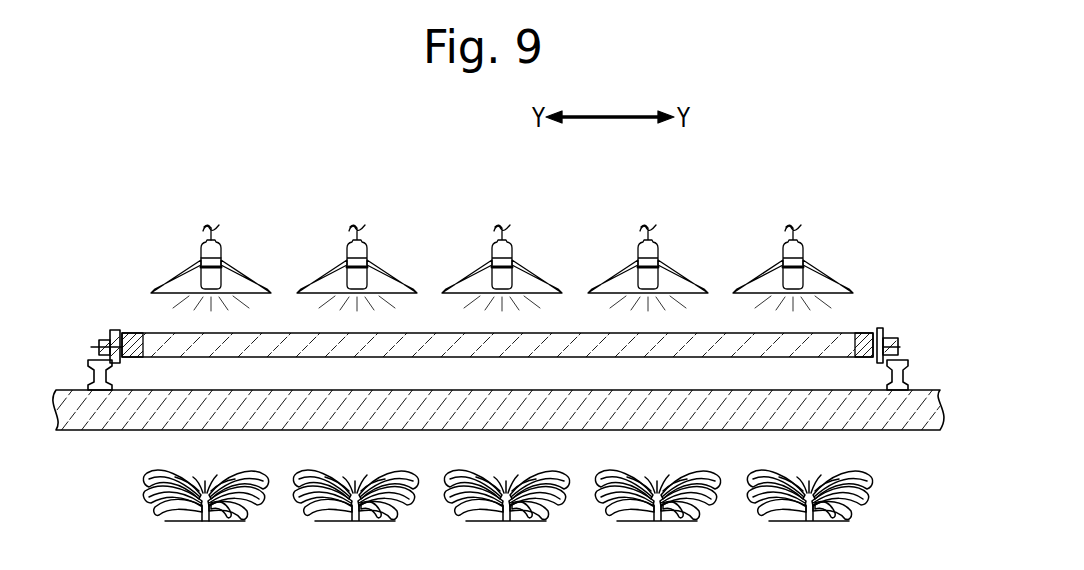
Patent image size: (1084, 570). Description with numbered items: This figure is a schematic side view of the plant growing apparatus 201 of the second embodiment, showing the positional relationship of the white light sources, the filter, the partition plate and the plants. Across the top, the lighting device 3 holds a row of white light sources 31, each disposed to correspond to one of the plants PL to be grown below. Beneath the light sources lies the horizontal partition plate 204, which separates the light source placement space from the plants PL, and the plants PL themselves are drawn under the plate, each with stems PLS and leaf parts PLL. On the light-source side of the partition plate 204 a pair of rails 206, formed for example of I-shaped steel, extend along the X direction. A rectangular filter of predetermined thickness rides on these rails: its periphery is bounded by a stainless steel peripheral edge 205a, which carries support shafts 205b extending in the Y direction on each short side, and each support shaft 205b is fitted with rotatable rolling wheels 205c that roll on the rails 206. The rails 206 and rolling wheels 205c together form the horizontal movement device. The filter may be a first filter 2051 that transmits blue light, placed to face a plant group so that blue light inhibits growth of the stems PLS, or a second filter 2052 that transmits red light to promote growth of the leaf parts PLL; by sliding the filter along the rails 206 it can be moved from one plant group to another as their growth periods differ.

The plant growing apparatus 201 is at (244, 213).
The lighting device 3 is at (378, 262).
The white light source 31 is at (215, 277).
The partition plate 204 is at (272, 405).
The first filter 2051 is at (543, 341).
The second filter 2052 is at (496, 345).
The peripheral edge 205a is at (866, 338).
The support shaft 205b is at (115, 348).
The rolling wheel 205c is at (885, 332).
The rail 206 is at (100, 357).
The plant to be grown PL is at (155, 475).
The stem PLS is at (210, 488).
The leaf part PLL is at (258, 478).